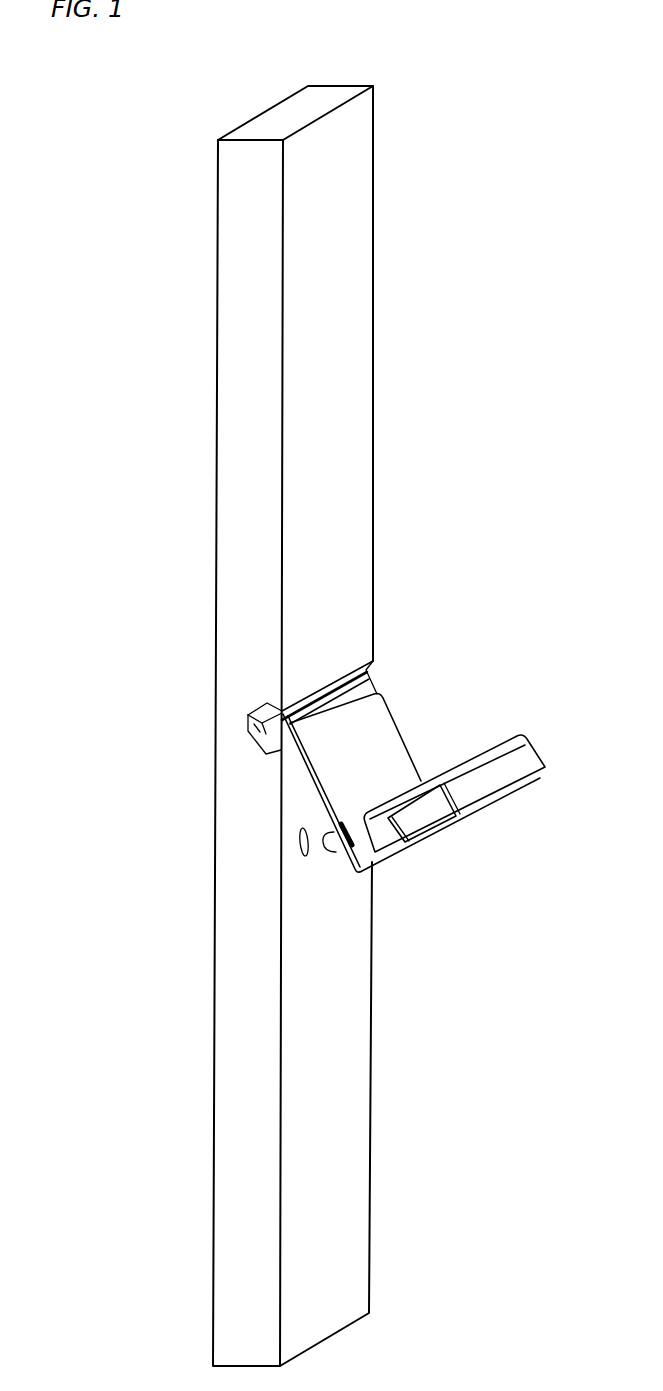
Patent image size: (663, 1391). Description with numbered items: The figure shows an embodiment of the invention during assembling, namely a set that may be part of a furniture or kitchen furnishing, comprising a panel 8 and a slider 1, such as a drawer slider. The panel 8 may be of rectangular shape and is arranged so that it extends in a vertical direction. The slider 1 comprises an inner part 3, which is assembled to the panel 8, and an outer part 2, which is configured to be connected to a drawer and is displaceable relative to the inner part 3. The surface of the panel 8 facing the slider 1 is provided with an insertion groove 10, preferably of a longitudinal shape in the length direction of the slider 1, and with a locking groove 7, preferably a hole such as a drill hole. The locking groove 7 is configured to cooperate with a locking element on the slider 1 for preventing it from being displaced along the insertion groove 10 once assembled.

The slider 1 is at (355, 799).
The outer part 2 is at (494, 789).
The inner part 3 is at (388, 722).
The locking groove 7 is at (309, 857).
The panel 8 is at (358, 325).
The insertion groove 10 is at (247, 713).